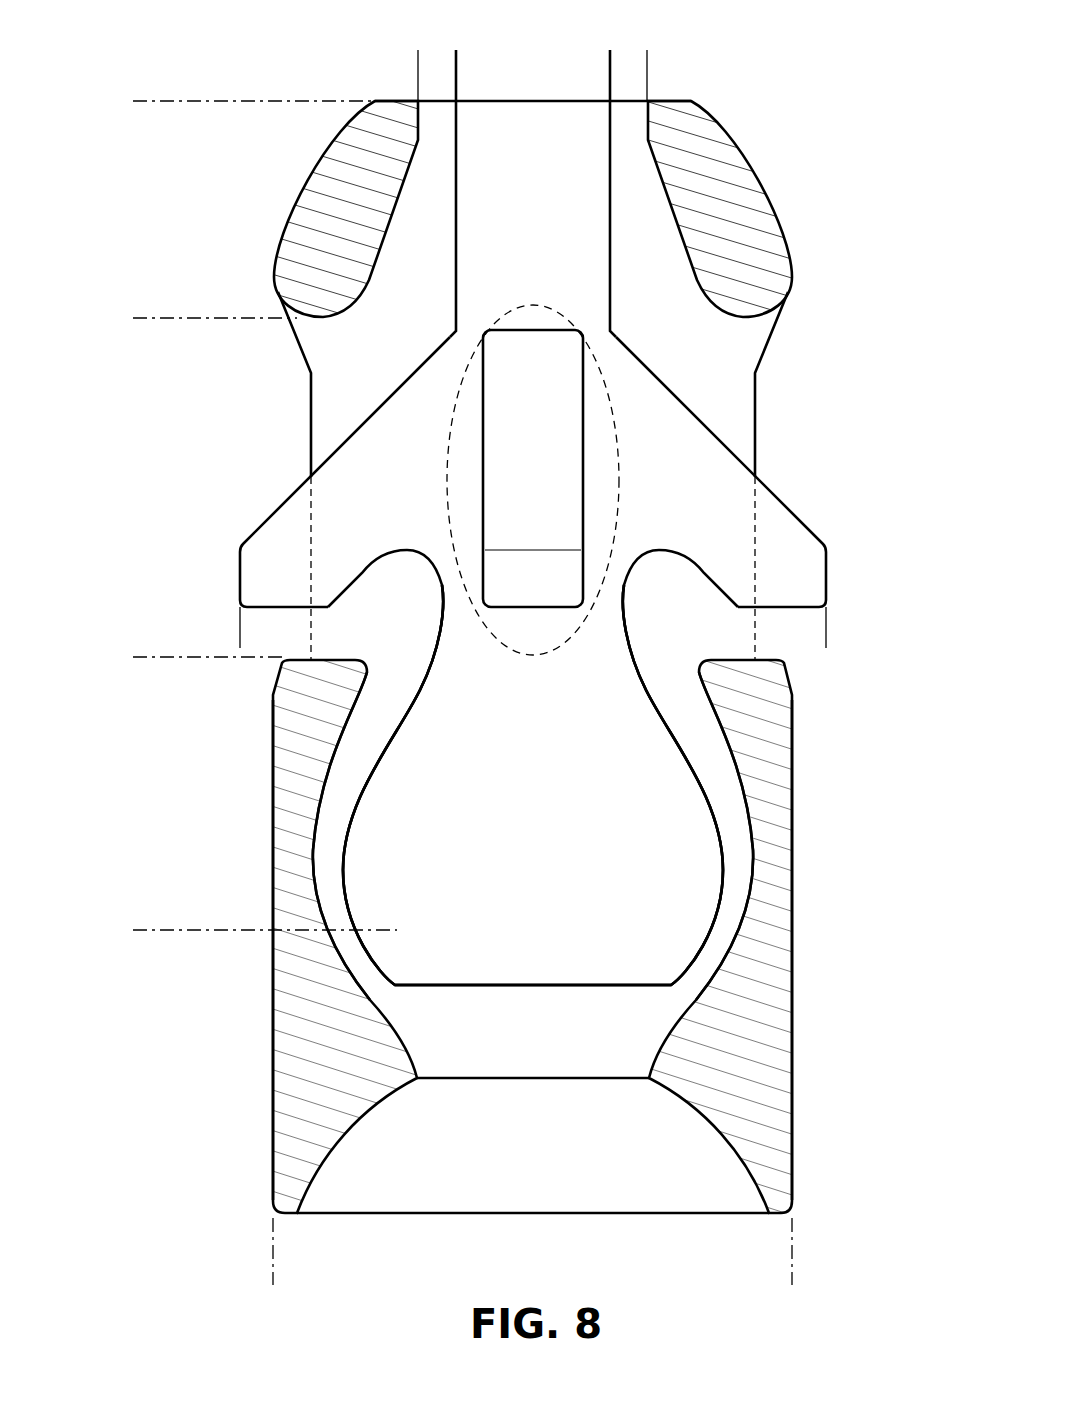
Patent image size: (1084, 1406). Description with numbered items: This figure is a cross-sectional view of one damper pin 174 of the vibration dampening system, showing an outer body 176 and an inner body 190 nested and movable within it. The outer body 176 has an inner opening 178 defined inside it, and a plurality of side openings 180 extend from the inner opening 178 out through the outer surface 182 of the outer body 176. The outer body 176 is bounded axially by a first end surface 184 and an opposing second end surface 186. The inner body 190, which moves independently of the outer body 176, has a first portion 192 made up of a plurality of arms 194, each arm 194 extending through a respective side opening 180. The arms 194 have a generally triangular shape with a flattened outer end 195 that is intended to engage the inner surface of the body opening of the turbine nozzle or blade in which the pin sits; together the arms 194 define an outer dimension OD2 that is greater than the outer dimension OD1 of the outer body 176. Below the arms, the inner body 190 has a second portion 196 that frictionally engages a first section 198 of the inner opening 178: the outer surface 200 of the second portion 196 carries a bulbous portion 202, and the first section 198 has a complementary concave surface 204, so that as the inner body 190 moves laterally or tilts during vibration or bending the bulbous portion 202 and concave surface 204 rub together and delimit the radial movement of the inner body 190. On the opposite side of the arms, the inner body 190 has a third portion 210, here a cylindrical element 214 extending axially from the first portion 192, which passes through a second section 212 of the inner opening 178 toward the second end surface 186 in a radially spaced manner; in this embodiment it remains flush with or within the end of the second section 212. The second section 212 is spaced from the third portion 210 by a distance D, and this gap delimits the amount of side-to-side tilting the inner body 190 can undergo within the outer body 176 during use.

The damper pin 174 is at (803, 807).
The outer body 176 is at (740, 1025).
The inner opening 178 is at (642, 212).
The side openings 180 is at (353, 417).
The outer surface 182 is at (273, 1040).
The first end surface 184 is at (707, 1215).
The second end surface 186 is at (717, 123).
The inner body 190 is at (605, 575).
The first portion 192 is at (133, 657).
The arms 194 is at (277, 545).
The flattened outer end 195 is at (238, 572).
The second portion 196 is at (133, 657).
The first section 198 is at (350, 980).
The outer surface 200 is at (722, 845).
The bulbous portion 202 is at (722, 845).
The concave surface 204 is at (720, 925).
The third portion 210 is at (133, 101).
The second section 212 is at (633, 122).
The cylindrical element 214 is at (541, 115).
The distance D is at (698, 63).
The outer dimension of outer body OD1 is at (273, 1269).
The outer dimension of arms OD2 is at (826, 635).